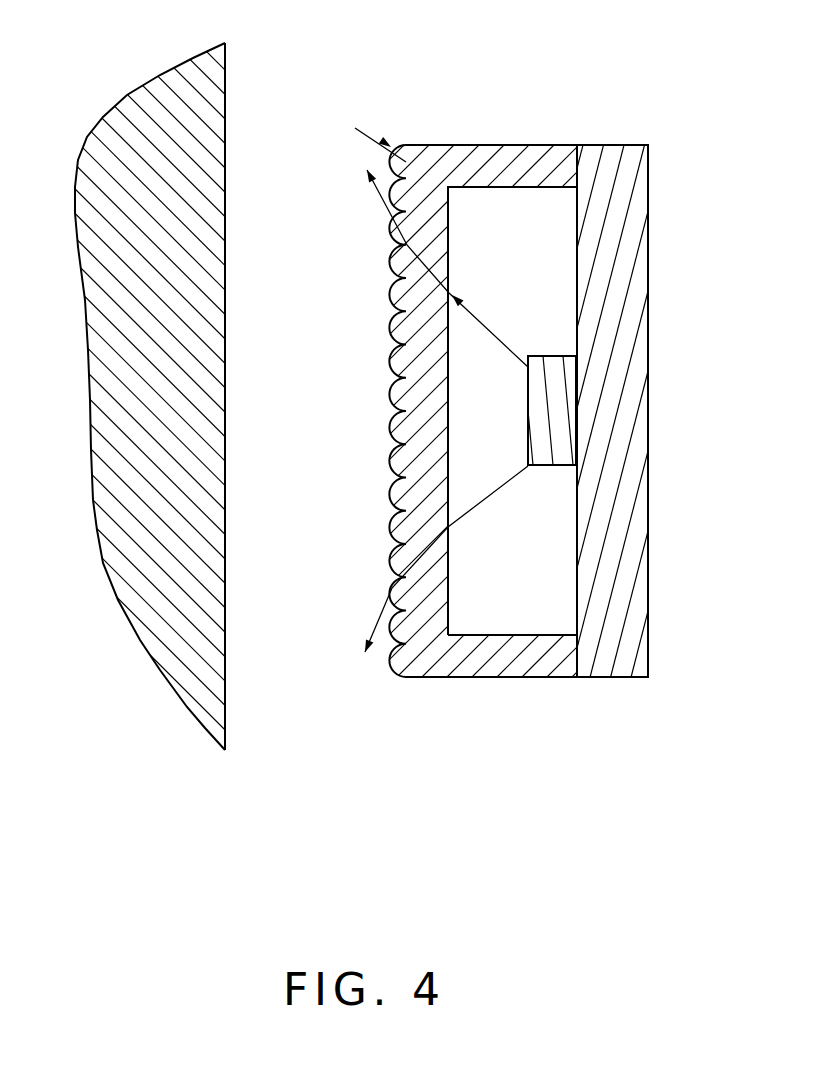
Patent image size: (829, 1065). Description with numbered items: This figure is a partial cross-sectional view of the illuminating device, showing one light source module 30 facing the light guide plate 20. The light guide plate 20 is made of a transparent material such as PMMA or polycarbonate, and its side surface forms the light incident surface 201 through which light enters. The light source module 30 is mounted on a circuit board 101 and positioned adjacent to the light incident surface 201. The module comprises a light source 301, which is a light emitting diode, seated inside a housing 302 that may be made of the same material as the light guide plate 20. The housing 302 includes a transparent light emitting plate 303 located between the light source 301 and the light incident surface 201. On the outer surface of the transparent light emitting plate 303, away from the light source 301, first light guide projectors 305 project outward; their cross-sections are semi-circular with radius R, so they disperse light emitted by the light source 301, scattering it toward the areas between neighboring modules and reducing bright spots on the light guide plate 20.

The light guide plate 20 is at (177, 375).
The light incident surface 201 is at (227, 617).
The light source module 30 is at (414, 383).
The circuit board 101 is at (613, 236).
The light source 301 is at (548, 410).
The housing 302 is at (510, 653).
The transparent light emitting plate 303 is at (438, 320).
The first light guide projectors 305 is at (400, 460).